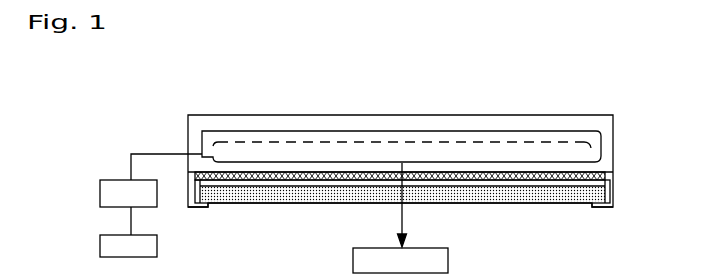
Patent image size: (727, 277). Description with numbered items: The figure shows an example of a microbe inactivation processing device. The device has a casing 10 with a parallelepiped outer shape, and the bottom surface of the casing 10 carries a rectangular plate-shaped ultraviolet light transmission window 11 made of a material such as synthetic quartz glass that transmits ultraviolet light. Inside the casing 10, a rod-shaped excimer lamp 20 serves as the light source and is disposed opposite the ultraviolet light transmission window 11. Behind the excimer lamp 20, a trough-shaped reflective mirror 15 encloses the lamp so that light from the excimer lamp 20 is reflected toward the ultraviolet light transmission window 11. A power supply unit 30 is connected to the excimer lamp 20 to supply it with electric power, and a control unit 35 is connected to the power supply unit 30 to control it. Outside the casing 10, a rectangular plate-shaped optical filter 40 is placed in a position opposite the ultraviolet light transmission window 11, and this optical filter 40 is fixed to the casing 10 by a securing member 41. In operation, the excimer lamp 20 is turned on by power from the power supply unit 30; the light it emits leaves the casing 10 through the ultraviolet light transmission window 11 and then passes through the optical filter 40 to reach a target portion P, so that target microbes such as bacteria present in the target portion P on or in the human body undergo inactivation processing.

The casing 10 is at (237, 108).
The reflective mirror 15 is at (355, 131).
The excimer lamp 20 is at (498, 140).
The ultraviolet light transmission window 11 is at (613, 185).
The optical filter 40 is at (553, 203).
The securing member 41 is at (613, 197).
The power supply unit 30 is at (100, 192).
The control unit 35 is at (100, 247).
The target portion P is at (353, 260).